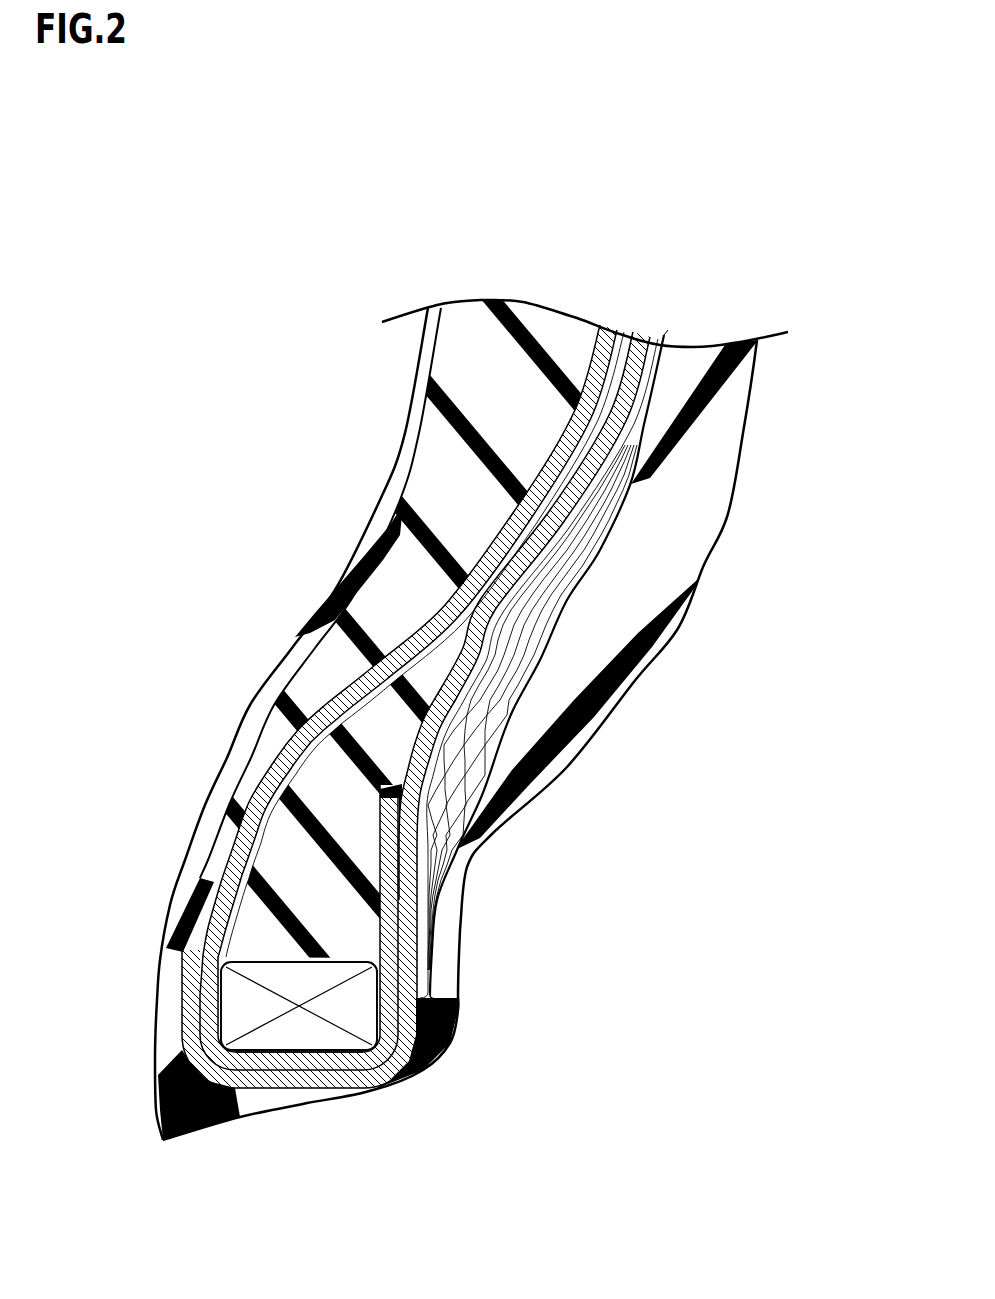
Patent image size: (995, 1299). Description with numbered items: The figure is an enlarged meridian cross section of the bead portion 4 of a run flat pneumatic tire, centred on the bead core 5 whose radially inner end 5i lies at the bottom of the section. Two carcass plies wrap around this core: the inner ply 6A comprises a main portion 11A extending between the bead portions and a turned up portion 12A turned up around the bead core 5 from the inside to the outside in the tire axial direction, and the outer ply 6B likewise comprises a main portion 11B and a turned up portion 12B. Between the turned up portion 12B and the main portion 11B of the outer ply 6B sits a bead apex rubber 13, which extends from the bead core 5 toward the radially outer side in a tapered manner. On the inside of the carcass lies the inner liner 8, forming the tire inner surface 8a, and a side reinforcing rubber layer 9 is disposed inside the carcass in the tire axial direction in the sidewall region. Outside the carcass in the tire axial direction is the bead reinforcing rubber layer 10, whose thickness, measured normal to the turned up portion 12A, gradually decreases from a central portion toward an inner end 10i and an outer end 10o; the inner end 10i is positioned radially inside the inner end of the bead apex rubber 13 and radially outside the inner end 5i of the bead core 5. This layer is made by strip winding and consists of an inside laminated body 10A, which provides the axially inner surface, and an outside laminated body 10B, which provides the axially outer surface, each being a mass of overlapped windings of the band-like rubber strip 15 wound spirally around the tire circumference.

The bead portion 4 is at (458, 1048).
The bead core 5 is at (300, 1033).
The inner end of bead core 5i is at (262, 1052).
The inner ply 6A is at (497, 649).
The outer ply 6B is at (497, 649).
The inner liner 8 is at (392, 502).
The tire inner surface 8a is at (402, 433).
The side reinforcing rubber layer 9 is at (470, 380).
The bead reinforcing rubber layer 10 is at (630, 666).
The inside laminated body 10A is at (453, 848).
The outside laminated body 10B is at (513, 713).
The outer end of bead reinforcing rubber layer 10o is at (650, 407).
The inner end of bead reinforcing rubber layer 10i is at (438, 1002).
The main portion of inner ply 11A is at (300, 758).
The turned up portion of inner ply 12A is at (417, 847).
The main portion of outer ply 11B is at (257, 853).
The turned up portion of outer ply 12B is at (397, 943).
The bead apex rubber 13 is at (385, 725).
The rubber strip 15 is at (582, 557).